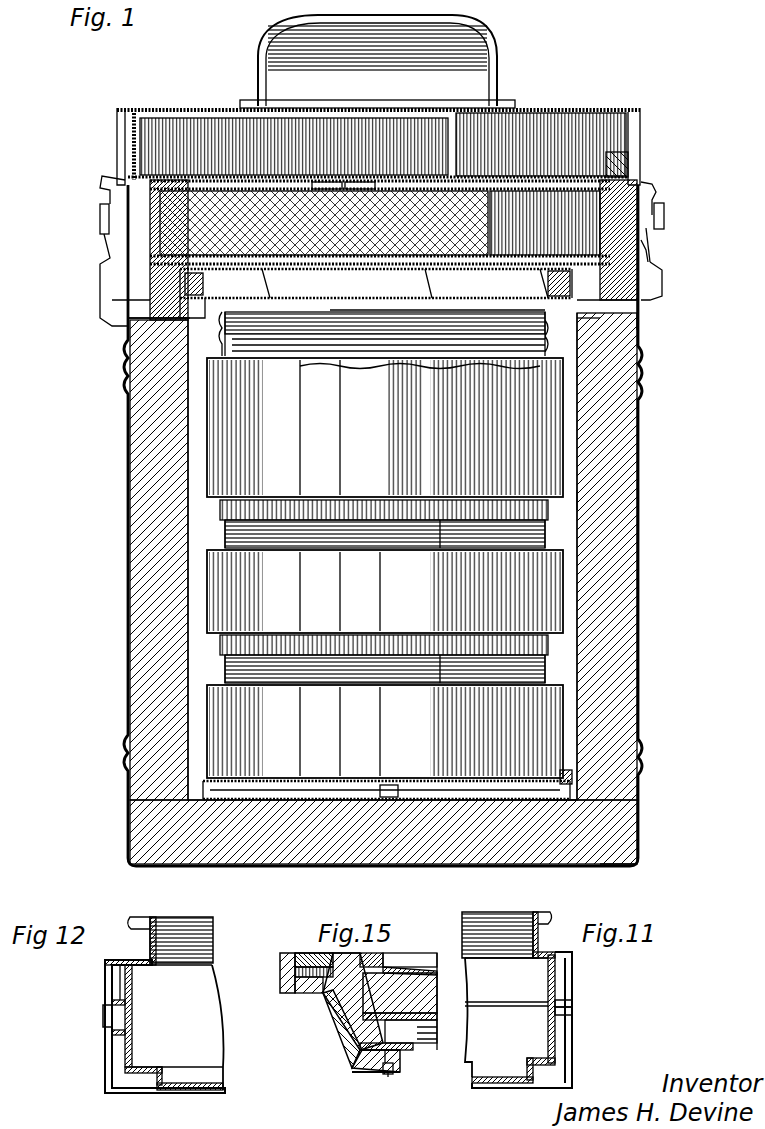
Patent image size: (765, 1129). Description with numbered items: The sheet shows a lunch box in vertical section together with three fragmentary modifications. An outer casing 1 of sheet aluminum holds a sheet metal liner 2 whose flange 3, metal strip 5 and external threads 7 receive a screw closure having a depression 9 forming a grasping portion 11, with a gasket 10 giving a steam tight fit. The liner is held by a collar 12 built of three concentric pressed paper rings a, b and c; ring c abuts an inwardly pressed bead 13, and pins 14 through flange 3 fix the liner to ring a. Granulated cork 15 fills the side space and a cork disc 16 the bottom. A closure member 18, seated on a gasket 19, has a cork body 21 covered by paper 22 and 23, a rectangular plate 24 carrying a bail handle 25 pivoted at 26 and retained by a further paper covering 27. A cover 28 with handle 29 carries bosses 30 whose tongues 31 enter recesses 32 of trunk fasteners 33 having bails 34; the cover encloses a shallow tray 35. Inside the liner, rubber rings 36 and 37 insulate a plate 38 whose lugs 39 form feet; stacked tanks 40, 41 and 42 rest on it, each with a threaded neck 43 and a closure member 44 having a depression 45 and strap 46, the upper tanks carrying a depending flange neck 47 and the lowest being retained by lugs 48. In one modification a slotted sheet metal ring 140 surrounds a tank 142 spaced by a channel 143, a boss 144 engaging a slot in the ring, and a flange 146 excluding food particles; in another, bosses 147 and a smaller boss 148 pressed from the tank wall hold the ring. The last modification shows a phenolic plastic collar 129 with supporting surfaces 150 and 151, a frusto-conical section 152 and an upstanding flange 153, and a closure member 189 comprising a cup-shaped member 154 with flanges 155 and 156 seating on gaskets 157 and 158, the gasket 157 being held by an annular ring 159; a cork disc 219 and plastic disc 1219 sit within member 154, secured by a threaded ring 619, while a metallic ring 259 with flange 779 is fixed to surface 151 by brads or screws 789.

In FIG. 1, the outer casing 1 is at (640, 480).
In FIG. 1, the liner 2 is at (585, 497).
In FIG. 1, the flange 3 is at (590, 326).
In FIG. 1, the metal strip 5 is at (227, 290).
In FIG. 1, the external threads 7 is at (548, 290).
In FIG. 1, the depression 9 is at (480, 290).
In FIG. 1, the gasket 10 is at (150, 318).
In FIG. 1, the grasping portion 11 is at (376, 293).
In FIG. 1, the collar 12 is at (150, 284).
In FIG. 1, the bead 13 is at (632, 167).
In FIG. 1, the pins 14 is at (638, 320).
In FIG. 1, the granulated cork 15 is at (615, 548).
In FIG. 1, the cork disc 16 is at (345, 855).
In FIG. 1, the closure member 18 is at (285, 186).
In FIG. 1, the gasket 19 is at (605, 262).
In FIG. 1, the cork body 21 is at (440, 185).
In FIG. 1, the paper covering 22 is at (225, 185).
In FIG. 1, the paper layer 23 is at (320, 182).
In FIG. 1, the rectangular plate 24 is at (348, 182).
In FIG. 1, the handle 25 is at (405, 188).
In FIG. 1, the pivot 26 is at (372, 186).
In FIG. 1, the second paper covering 27 is at (245, 185).
In FIG. 1, the cover 28 is at (640, 112).
In FIG. 1, the handle 29 is at (497, 48).
In FIG. 1, the bosses 30 is at (665, 212).
In FIG. 1, the tongues 31 is at (660, 226).
In FIG. 1, the recesses 32 is at (660, 240).
In FIG. 1, the fastening devices 33 is at (655, 283).
In FIG. 1, the bail 34 is at (655, 188).
In FIG. 1, the tray 35 is at (140, 150).
In FIG. 1, the ring 36 is at (640, 830).
In FIG. 1, the ring 37 is at (565, 800).
In FIG. 1, the plate 38 is at (290, 800).
In FIG. 1, the lugs 39 is at (600, 783).
In FIG. 1, the tank 40 is at (220, 710).
In FIG. 1, the tank 41 is at (232, 572).
In FIG. 1, the tank 42 is at (215, 487).
In FIG. 1, the threaded neck 43 is at (255, 362).
In FIG. 1, the closure member 44 is at (215, 362).
In FIG. 1, the depression 45 is at (340, 310).
In FIG. 1, the strap 46 is at (375, 310).
In FIG. 1, the flange neck 47 is at (548, 515).
In FIG. 1, the lugs 48 is at (595, 770).
In FIG. 1, the collar ring a is at (150, 304).
In FIG. 1, the collar ring b is at (118, 201).
In FIG. 1, the collar ring c is at (122, 186).
In FIG. 15, the collar 129 is at (345, 1058).
In FIG. 12, the ring 140 is at (105, 972).
In FIG. 11, the ring 140 is at (572, 1040).
In FIG. 12, the tank 142 is at (164, 1003).
In FIG. 15, the tank 142 is at (282, 979).
In FIG. 11, the tank 142 is at (532, 977).
In FIG. 11, the channel 143 is at (572, 1003).
In FIG. 11, the boss 144 is at (572, 1015).
In FIG. 11, the flange 146 is at (555, 957).
In FIG. 12, the bosses 147 is at (120, 1040).
In FIG. 12, the smaller boss 148 is at (103, 1017).
In FIG. 15, the supporting surface 150 is at (310, 1000).
In FIG. 15, the supporting surface 151 is at (368, 1072).
In FIG. 15, the frusto-conical section 152 is at (335, 1035).
In FIG. 15, the flange 153 is at (280, 962).
In FIG. 15, the cup-shaped member 154 is at (398, 970).
In FIG. 15, the flange 155 is at (325, 955).
In FIG. 15, the flange 156 is at (355, 1068).
In FIG. 15, the gasket 157 is at (285, 995).
In FIG. 15, the gasket 158 is at (384, 1073).
In FIG. 15, the annular ring 159 is at (300, 955).
In FIG. 15, the closure member 189 is at (440, 985).
In FIG. 15, the cork disc 219 is at (430, 1045).
In FIG. 15, the metallic ring 259 is at (415, 1052).
In FIG. 15, the annular ring 619 is at (378, 946).
In FIG. 15, the flange 779 is at (400, 1065).
In FIG. 15, the brads or screws 789 is at (390, 1075).
In FIG. 15, the disc 1219 is at (437, 955).